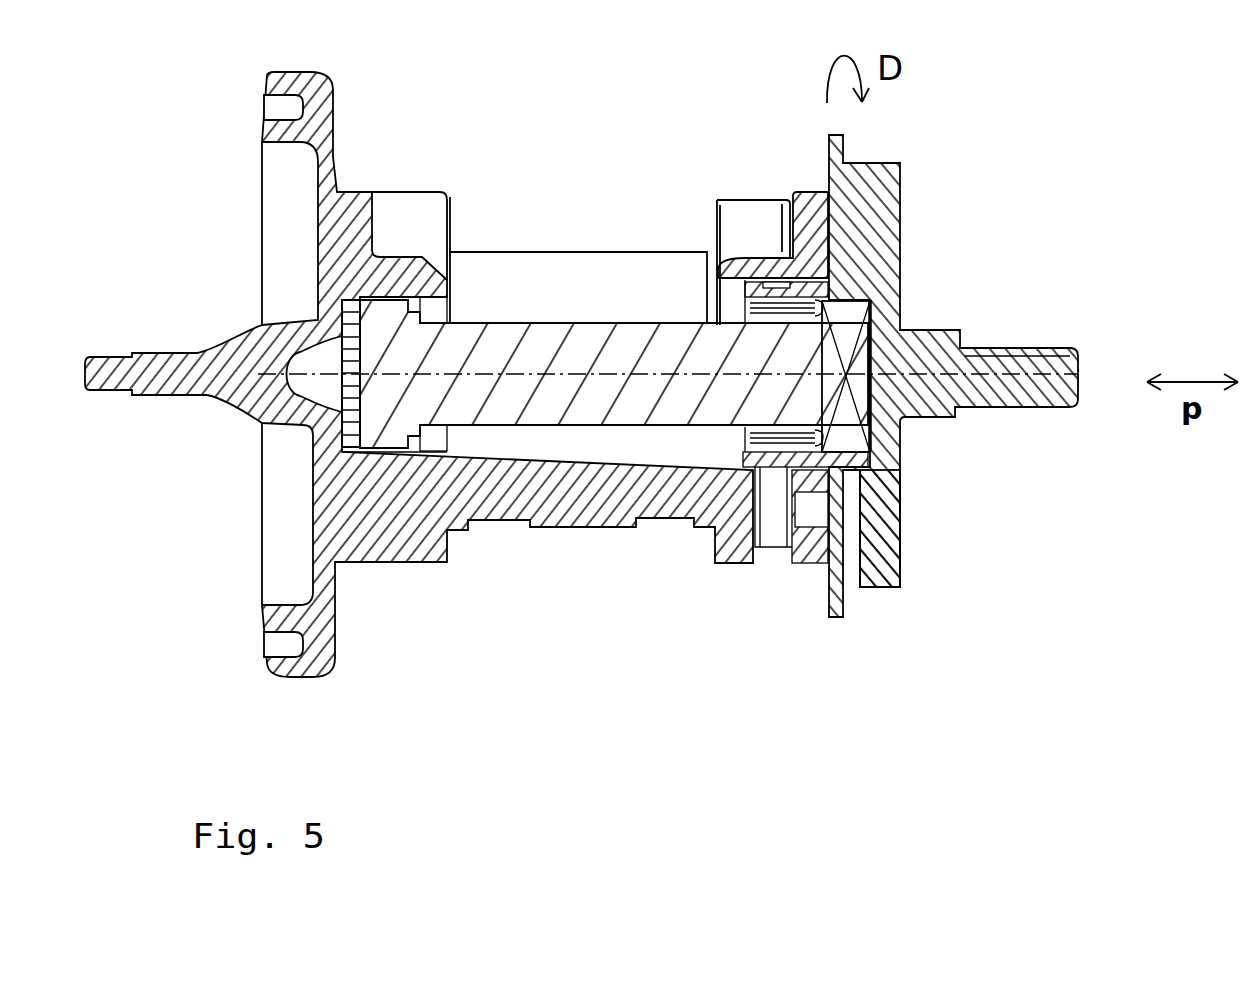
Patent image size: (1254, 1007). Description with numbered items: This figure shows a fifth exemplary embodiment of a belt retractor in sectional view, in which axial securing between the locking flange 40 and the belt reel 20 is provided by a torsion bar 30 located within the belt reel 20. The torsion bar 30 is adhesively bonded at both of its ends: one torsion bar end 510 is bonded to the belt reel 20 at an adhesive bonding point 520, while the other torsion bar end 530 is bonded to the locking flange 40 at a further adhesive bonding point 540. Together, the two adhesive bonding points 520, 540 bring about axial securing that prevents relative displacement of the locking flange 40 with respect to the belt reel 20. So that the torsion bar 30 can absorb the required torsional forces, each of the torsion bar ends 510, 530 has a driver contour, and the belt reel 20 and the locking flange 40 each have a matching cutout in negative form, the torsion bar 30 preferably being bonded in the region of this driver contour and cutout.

The belt reel 20 is at (812, 237).
The torsion bar 30 is at (598, 392).
The locking flange 40 is at (870, 203).
The torsion bar end 510 is at (365, 342).
The adhesive bonding point 520 is at (380, 455).
The torsion bar end 530 is at (812, 397).
The adhesive bonding point 540 is at (902, 582).